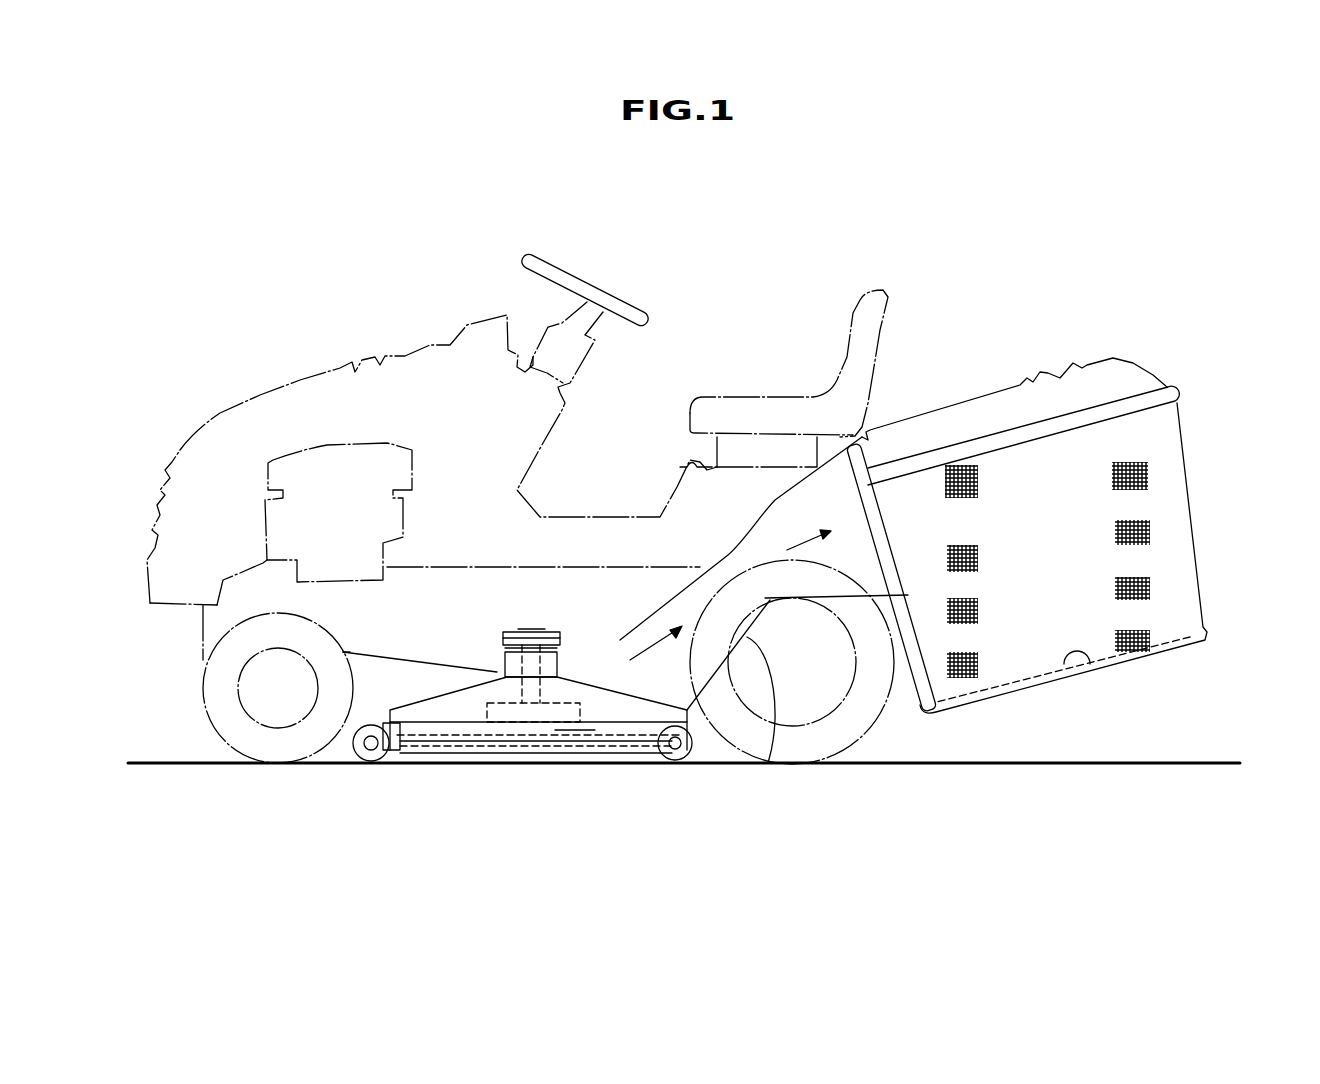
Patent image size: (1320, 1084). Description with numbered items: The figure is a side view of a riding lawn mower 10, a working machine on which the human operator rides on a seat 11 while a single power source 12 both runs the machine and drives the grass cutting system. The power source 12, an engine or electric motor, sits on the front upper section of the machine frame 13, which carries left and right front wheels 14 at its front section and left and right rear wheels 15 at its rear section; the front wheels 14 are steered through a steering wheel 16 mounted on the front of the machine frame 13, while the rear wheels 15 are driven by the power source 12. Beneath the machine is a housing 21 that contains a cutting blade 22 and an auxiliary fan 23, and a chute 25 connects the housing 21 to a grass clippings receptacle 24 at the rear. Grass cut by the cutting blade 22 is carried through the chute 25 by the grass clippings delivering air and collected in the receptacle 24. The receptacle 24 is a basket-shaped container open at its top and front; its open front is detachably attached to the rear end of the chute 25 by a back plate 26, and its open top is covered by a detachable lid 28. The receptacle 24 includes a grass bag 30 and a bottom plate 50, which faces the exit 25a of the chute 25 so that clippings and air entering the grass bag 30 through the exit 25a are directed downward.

The lawn mower 10 is at (1093, 284).
The seat 11 is at (762, 390).
The power source 12 is at (372, 443).
The machine frame 13 is at (380, 657).
The front wheel 14 is at (210, 715).
The rear wheel 15 is at (853, 747).
The steering wheel 16 is at (583, 283).
The housing 21 is at (457, 730).
The cutting blade 22 is at (487, 730).
The auxiliary fan 23 is at (570, 727).
The grass clippings receptacle 24 is at (1096, 605).
The chute 25 is at (768, 763).
The exit 25a is at (880, 523).
The back plate 26 is at (895, 556).
The lid 28 is at (1120, 375).
The grass bag 30 is at (1163, 440).
The bottom plate 50 is at (1096, 696).